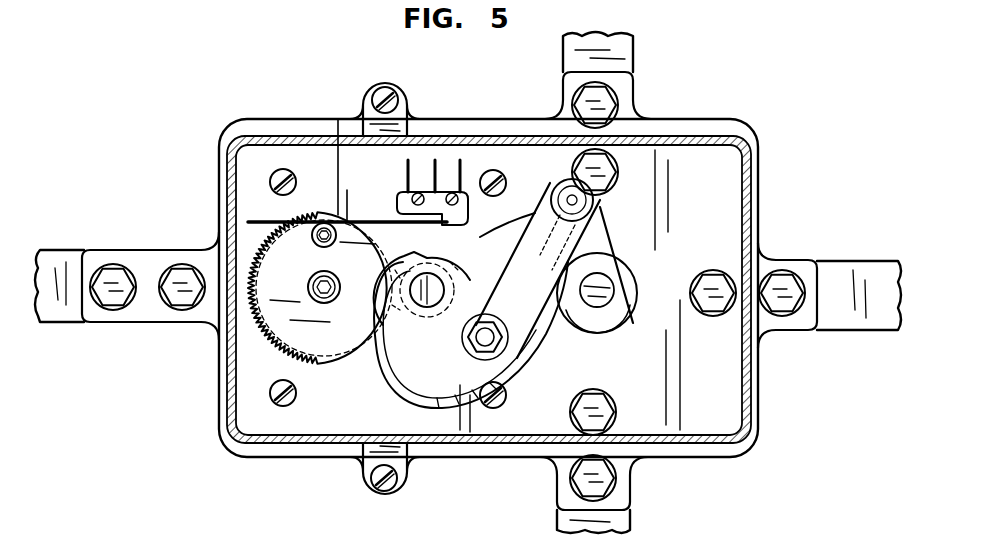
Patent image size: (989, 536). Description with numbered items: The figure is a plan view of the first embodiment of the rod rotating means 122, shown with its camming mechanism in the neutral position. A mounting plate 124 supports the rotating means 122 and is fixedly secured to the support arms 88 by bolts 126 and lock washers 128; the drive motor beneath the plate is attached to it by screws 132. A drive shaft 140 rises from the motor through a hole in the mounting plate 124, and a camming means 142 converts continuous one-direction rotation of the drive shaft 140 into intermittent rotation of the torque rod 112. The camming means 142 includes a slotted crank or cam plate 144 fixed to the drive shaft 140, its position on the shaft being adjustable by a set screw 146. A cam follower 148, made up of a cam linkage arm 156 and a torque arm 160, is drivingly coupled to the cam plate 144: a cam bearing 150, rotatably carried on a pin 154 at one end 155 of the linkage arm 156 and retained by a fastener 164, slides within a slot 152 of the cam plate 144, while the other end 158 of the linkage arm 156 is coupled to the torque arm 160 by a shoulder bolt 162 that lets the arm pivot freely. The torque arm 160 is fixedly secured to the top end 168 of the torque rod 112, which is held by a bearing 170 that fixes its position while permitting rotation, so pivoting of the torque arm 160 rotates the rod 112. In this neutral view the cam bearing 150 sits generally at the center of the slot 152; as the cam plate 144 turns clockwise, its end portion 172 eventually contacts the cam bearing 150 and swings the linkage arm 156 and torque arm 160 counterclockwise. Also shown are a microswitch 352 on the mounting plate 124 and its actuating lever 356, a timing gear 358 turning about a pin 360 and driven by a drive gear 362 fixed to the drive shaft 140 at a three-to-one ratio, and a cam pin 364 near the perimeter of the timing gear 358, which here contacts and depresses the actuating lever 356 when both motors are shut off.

The support arms 88 is at (59, 258).
The torque rod 112 is at (599, 305).
The rod rotating means 122 is at (284, 98).
The mounting plate 124 is at (284, 462).
The bolts 126 is at (178, 300).
The lock washers 128 is at (176, 268).
The screws 132 is at (296, 176).
The drive shaft 140 is at (410, 296).
The camming means 142 is at (652, 246).
The cam plate 144 is at (392, 392).
The set screw 146 is at (424, 348).
The cam follower 148 is at (614, 221).
The cam bearing 150 is at (530, 322).
The slot 152 is at (424, 398).
The pin 154 is at (497, 322).
The end of the linkage arm 155 is at (478, 355).
The cam linkage arm 156 is at (540, 218).
The other end of the linkage arm 158 is at (553, 178).
The torque arm 160 is at (606, 255).
The shoulder bolt 162 is at (585, 238).
The fastener 164 is at (505, 350).
The top end of the torque rod 168 is at (628, 308).
The bearing 170 is at (622, 282).
The end portion of the cam plate 172 is at (480, 238).
The microswitch 352 is at (458, 156).
The actuating lever 356 is at (255, 221).
The timing gear 358 is at (285, 350).
The pin 360 is at (325, 303).
The drive gear 362 is at (430, 288).
The cam pin 364 is at (318, 246).